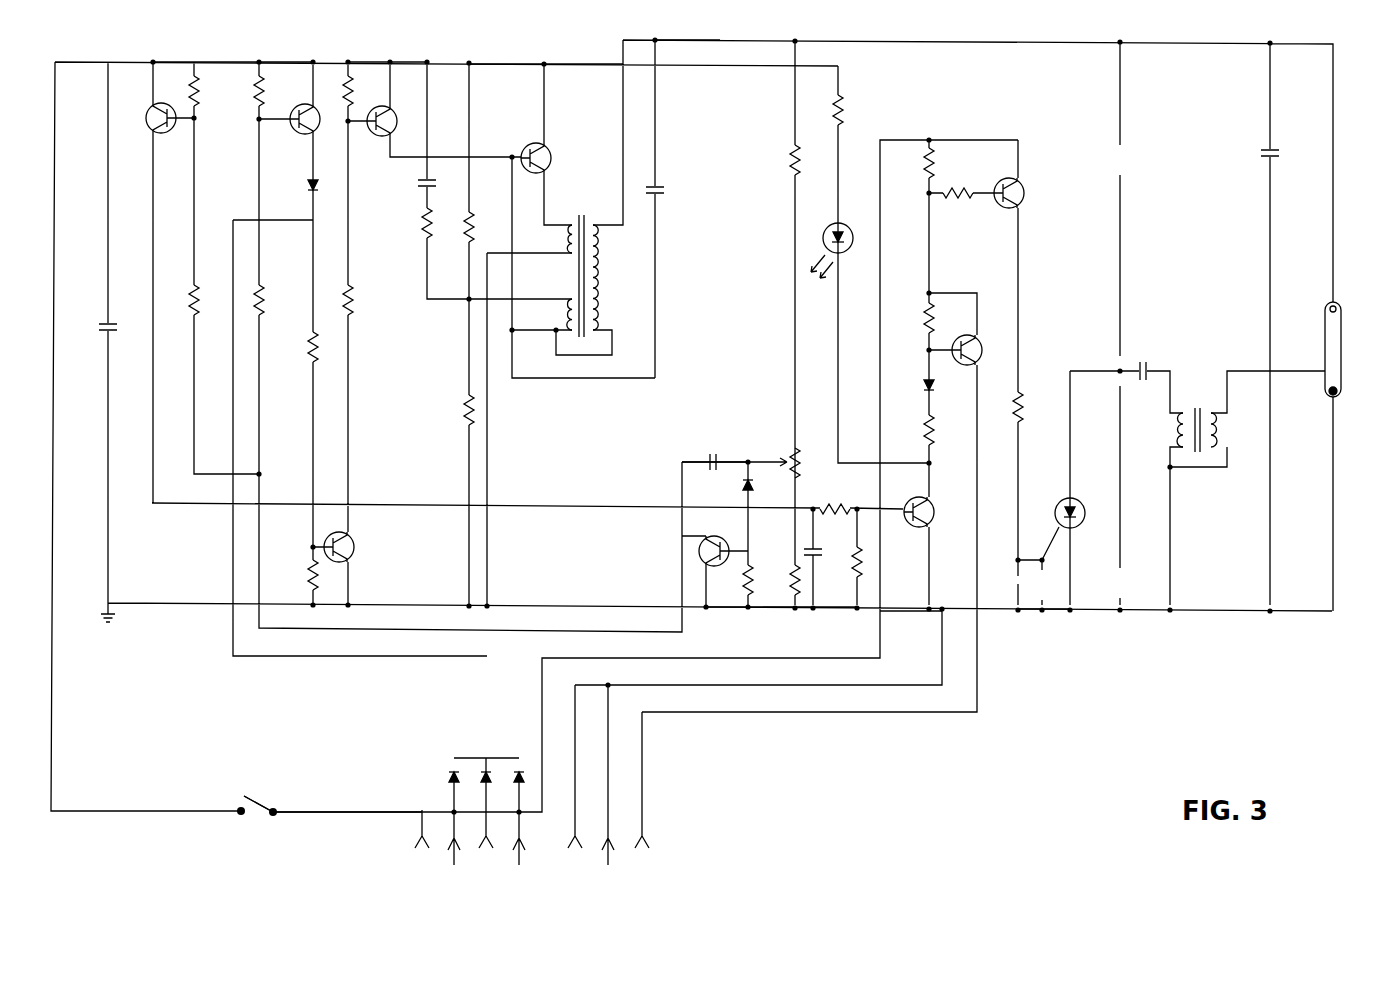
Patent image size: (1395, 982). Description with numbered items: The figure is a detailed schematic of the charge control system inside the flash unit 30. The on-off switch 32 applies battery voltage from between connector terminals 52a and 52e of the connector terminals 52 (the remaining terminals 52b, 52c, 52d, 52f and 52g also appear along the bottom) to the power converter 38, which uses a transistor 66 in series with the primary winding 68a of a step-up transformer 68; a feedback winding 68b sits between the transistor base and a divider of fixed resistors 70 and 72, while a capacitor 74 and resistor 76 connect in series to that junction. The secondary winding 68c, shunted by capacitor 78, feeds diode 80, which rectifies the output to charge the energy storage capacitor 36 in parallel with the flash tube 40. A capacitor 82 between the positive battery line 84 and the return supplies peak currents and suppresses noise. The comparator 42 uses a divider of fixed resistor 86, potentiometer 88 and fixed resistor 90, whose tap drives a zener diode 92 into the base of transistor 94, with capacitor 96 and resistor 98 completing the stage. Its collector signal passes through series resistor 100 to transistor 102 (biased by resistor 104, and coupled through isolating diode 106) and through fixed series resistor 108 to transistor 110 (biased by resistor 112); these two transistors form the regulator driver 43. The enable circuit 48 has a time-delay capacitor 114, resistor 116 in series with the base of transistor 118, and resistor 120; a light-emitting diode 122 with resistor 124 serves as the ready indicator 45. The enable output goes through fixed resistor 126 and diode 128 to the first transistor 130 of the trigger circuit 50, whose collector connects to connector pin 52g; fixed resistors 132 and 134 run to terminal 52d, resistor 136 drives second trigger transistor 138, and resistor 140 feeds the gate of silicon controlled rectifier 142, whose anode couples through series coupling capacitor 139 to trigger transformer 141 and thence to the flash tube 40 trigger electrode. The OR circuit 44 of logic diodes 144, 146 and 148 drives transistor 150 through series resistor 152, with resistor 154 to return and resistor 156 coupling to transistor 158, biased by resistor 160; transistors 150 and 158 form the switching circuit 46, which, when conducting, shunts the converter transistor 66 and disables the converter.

The flash unit 30 is at (921, 742).
The on-off switch 32 is at (260, 818).
The energy storage capacitor 36 is at (1275, 151).
The power converter 38 is at (586, 75).
The flash tube 40 is at (1342, 338).
The comparator 42 is at (738, 442).
The regulator driver 43 is at (253, 44).
The OR circuit 44 is at (396, 798).
The ready indicator 45 is at (826, 300).
The switching circuit 46 is at (381, 44).
The enable circuit 48 is at (827, 624).
The trigger circuit 50 is at (1037, 620).
The connector terminals 52 is at (568, 852).
The connector terminal 52a is at (422, 840).
The connector terminal 52b is at (454, 853).
The connector terminal 52c is at (487, 840).
The connector terminal 52d is at (521, 853).
The connector terminal 52e is at (578, 840).
The connector terminal 52f is at (610, 853).
The connector pin 52g is at (644, 840).
The transistor 66 is at (551, 154).
The step-up transformer 68 is at (581, 254).
The primary winding 68a is at (566, 240).
The feedback winding 68b is at (566, 318).
The secondary winding 68c is at (598, 269).
The fixed resistor 70 is at (476, 233).
The fixed resistor 72 is at (462, 410).
The capacitor 74 is at (420, 190).
The resistor 76 is at (420, 232).
The capacitor 78 is at (661, 192).
The diode 80 is at (693, 36).
The capacitor 82 is at (100, 318).
The positive battery line 84 is at (504, 62).
The fixed resistor 86 is at (789, 168).
The potentiometer 88 is at (800, 468).
The fixed resistor 90 is at (790, 577).
The zener diode 92 is at (742, 490).
The transistor 94 is at (711, 540).
The capacitor 96 is at (710, 448).
The resistor 98 is at (742, 583).
The series resistor 100 is at (263, 300).
The transistor 102 is at (297, 134).
The resistor 104 is at (255, 100).
The isolating diode 106 is at (305, 192).
The fixed series resistor 108 is at (200, 306).
The transistor 110 is at (167, 133).
The resistor 112 is at (190, 98).
The capacitor 114 is at (819, 551).
The resistor 116 is at (838, 506).
The transistor 118 is at (907, 527).
The resistor 120 is at (852, 566).
The light-emitting diode 122 is at (826, 228).
The resistor 124 is at (847, 106).
The fixed resistor 126 is at (922, 424).
The diode 128 is at (922, 386).
The first transistor 130 is at (1000, 330).
The fixed resistor 132 is at (922, 322).
The fixed resistor 134 is at (937, 162).
The fixed resistor 136 is at (956, 200).
The second trigger transistor 138 is at (1022, 187).
The series coupling capacitor 139 is at (1146, 364).
The resistor 140 is at (1024, 413).
The trigger transformer 141 is at (1198, 412).
The silicon controlled rectifier 142 is at (1058, 498).
The logic diode 144 is at (447, 777).
The logic diode 146 is at (480, 770).
The logic diode 148 is at (515, 770).
The transistor 150 is at (355, 541).
The series resistor 152 is at (306, 350).
The resistor 154 is at (306, 572).
The resistor 156 is at (356, 302).
The transistor 158 is at (374, 136).
The resistor 160 is at (378, 83).